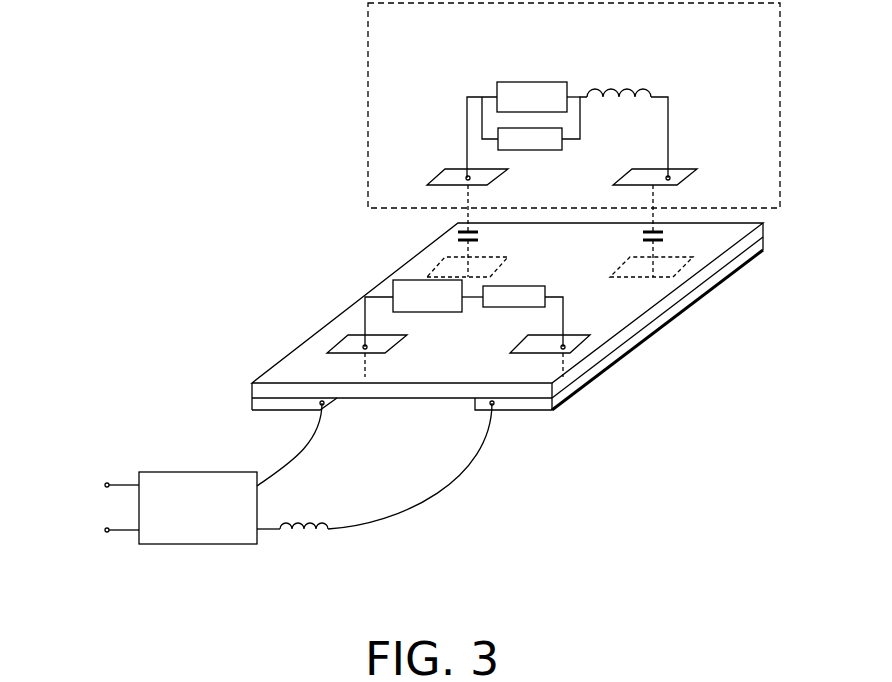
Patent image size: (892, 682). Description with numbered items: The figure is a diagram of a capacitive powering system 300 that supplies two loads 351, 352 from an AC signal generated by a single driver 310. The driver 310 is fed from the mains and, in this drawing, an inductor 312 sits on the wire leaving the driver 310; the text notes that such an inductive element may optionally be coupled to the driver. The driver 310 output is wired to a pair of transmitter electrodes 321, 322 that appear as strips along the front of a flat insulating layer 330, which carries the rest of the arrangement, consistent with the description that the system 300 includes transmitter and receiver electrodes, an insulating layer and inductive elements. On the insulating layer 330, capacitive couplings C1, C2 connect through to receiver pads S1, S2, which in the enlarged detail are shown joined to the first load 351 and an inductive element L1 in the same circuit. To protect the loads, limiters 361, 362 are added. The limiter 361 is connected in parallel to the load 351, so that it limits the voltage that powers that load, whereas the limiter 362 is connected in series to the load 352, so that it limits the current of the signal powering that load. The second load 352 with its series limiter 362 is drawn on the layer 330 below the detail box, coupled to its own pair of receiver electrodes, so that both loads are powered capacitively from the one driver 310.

The capacitive powering system 300 is at (188, 58).
The driver 310 is at (197, 548).
The inductor / wire connection 312 is at (322, 540).
The first electrode strip 321 is at (250, 405).
The second electrode strip 322 is at (537, 404).
The carrier plate 330 is at (680, 297).
The load 351 is at (541, 82).
The load 352 is at (427, 312).
The limiter 361 is at (537, 150).
The limiter 362 is at (500, 307).
The first switch pad S1 is at (458, 168).
The second switch pad S2 is at (688, 166).
The inductor L1 is at (619, 79).
The first capacitor C1 is at (456, 234).
The second capacitor C2 is at (641, 236).